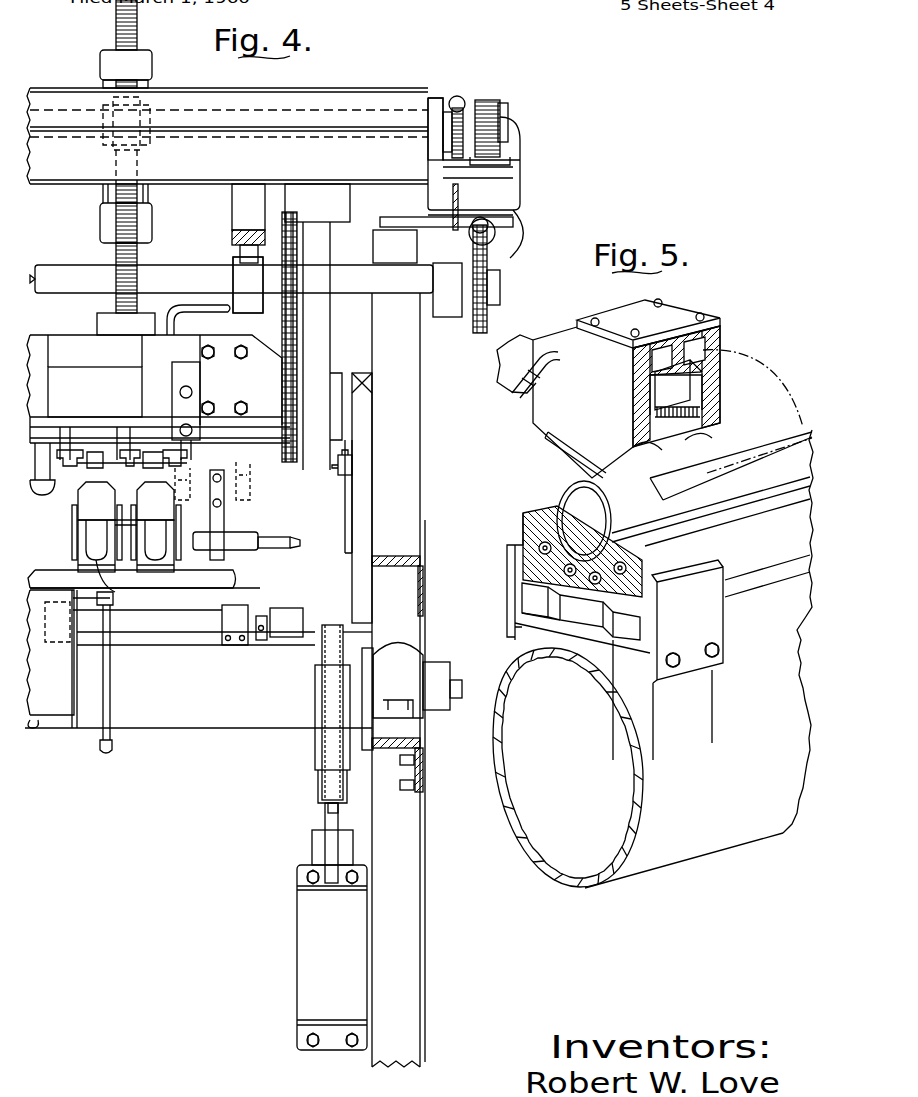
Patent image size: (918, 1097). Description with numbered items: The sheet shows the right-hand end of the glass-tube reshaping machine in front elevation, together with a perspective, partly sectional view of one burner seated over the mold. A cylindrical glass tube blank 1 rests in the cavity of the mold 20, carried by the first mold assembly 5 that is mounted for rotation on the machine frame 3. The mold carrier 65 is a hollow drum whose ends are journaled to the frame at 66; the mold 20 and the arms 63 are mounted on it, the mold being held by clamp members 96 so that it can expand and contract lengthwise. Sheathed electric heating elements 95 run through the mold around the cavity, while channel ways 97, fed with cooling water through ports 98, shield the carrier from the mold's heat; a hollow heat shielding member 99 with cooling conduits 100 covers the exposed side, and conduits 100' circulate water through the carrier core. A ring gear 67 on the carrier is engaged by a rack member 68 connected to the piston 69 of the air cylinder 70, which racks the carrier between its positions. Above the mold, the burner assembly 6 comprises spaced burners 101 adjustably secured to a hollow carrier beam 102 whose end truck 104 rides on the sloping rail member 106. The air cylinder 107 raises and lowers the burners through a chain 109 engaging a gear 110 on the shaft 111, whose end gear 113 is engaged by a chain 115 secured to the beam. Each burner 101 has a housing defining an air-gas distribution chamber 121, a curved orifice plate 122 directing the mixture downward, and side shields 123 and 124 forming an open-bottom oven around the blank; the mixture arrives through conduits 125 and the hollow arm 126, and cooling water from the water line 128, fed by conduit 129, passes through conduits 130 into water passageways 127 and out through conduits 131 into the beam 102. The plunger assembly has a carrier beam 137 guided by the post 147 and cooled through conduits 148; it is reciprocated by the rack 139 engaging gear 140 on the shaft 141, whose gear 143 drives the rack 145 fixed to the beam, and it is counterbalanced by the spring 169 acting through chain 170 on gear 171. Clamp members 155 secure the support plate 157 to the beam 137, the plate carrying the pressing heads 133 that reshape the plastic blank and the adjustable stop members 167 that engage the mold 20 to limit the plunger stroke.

In FIG. 4, the glass tube blank 1 is at (232, 582).
In FIG. 5, the glass tube blank 1 is at (568, 496).
In FIG. 4, the machine frame 3 is at (425, 930).
In FIG. 5, the first press bed or mold assembly 5 is at (501, 525).
In FIG. 5, the burner assembly 6 is at (569, 318).
In FIG. 4, the mold 20 is at (258, 590).
In FIG. 5, the mold 20 is at (530, 505).
In FIG. 4, the arms 63 is at (300, 608).
In FIG. 4, the mold carrier 65 is at (146, 725).
In FIG. 5, the mold carrier 65 is at (535, 848).
In FIG. 4, the journal 66 is at (400, 643).
In FIG. 4, the ring gear 67 is at (375, 637).
In FIG. 4, the rack member 68 is at (325, 650).
In FIG. 4, the piston 69 is at (330, 845).
In FIG. 4, the air cylinder 70 is at (298, 933).
In FIG. 5, the sheathed electric heating elements 95 is at (532, 540).
In FIG. 4, the clamp members 96 is at (220, 632).
In FIG. 5, the clamp members 96 is at (508, 565).
In FIG. 4, the channel ways 97 is at (140, 634).
In FIG. 5, the channel ways 97 is at (525, 602).
In FIG. 4, the ports 98 is at (262, 614).
In FIG. 4, the heat shielding member 99 is at (60, 705).
In FIG. 4, the conduits 100 is at (115, 760).
In FIG. 4, the conduits 100' is at (461, 680).
In FIG. 4, the burners 101 is at (160, 576).
In FIG. 5, the burners 101 is at (540, 425).
In FIG. 4, the carrier beam 102 is at (333, 498).
In FIG. 4, the two-wheeled truck 104 is at (365, 462).
In FIG. 4, the rail member 106 is at (365, 488).
In FIG. 4, the air cylinder 107 is at (512, 225).
In FIG. 4, the chain 109 is at (470, 226).
In FIG. 4, the gear 110 is at (505, 255).
In FIG. 4, the shaft 111 is at (75, 265).
In FIG. 4, the gear 113 is at (280, 318).
In FIG. 4, the chain 115 is at (282, 373).
In FIG. 5, the air-gas distribution chamber 121 is at (710, 360).
In FIG. 5, the curved orifice plate 122 is at (712, 400).
In FIG. 5, the side shield 123 is at (562, 458).
In FIG. 5, the side shield 124 is at (750, 400).
In FIG. 4, the conduits 125 is at (93, 455).
In FIG. 4, the hollow arm 126 is at (100, 565).
In FIG. 5, the hollow arm 126 is at (536, 340).
In FIG. 5, the water passageways 127 is at (693, 350).
In FIG. 4, the water line 128 is at (242, 534).
In FIG. 4, the conduit 129 is at (285, 541).
In FIG. 4, the conduits 130 is at (176, 548).
In FIG. 4, the conduits 131 is at (72, 545).
In FIG. 4, the pressing heads 133 is at (52, 480).
In FIG. 4, the carrier beam 137 is at (70, 335).
In FIG. 4, the rack 139 is at (514, 178).
In FIG. 4, the gear 140 is at (490, 100).
In FIG. 4, the shaft 141 is at (506, 108).
In FIG. 4, the gear 143 is at (145, 102).
In FIG. 4, the rack 145 is at (137, 40).
In FIG. 4, the post 147 is at (325, 335).
In FIG. 4, the conduits 148 is at (205, 300).
In FIG. 4, the clamp members 155 is at (178, 362).
In FIG. 4, the support plate 157 is at (250, 435).
In FIG. 4, the adjustable stop members 167 is at (250, 462).
In FIG. 4, the spring 169 is at (460, 105).
In FIG. 4, the chain 170 is at (457, 96).
In FIG. 4, the gear 171 is at (440, 100).